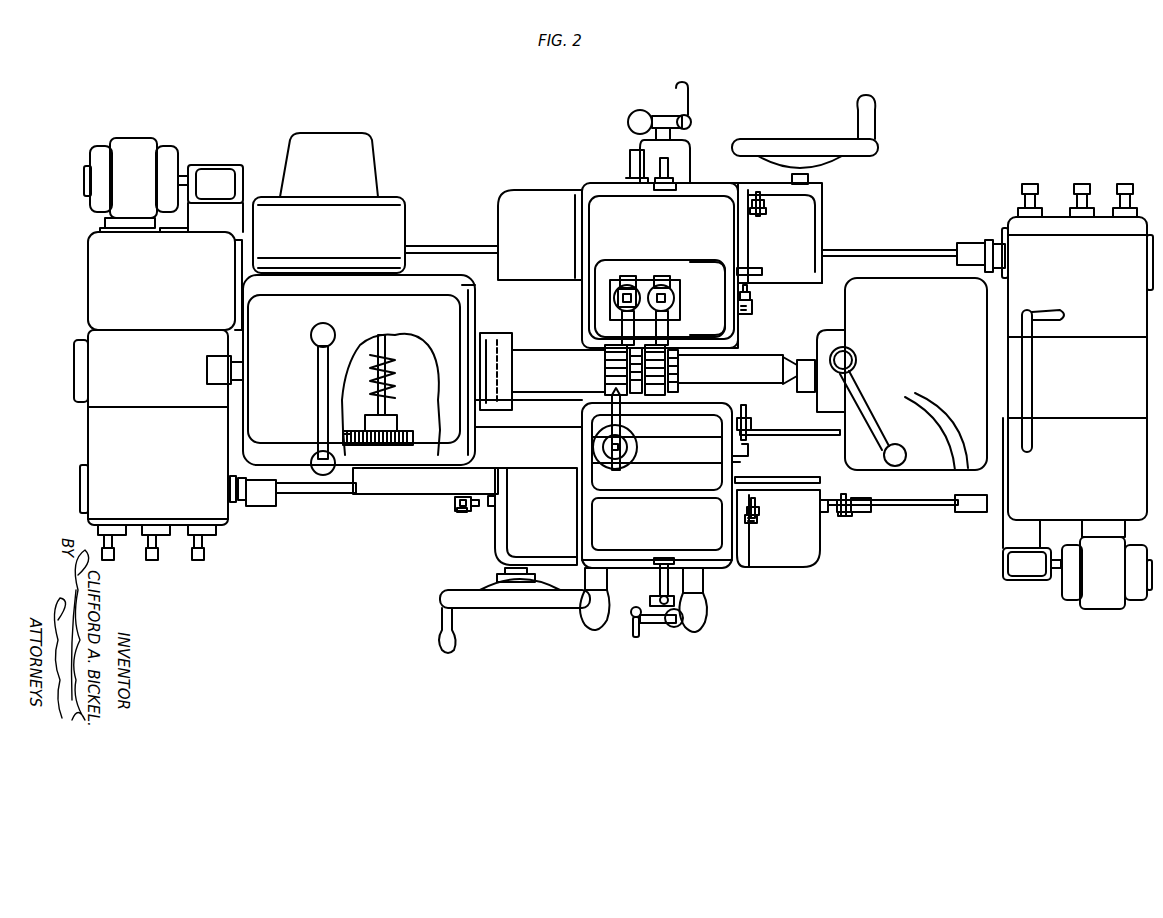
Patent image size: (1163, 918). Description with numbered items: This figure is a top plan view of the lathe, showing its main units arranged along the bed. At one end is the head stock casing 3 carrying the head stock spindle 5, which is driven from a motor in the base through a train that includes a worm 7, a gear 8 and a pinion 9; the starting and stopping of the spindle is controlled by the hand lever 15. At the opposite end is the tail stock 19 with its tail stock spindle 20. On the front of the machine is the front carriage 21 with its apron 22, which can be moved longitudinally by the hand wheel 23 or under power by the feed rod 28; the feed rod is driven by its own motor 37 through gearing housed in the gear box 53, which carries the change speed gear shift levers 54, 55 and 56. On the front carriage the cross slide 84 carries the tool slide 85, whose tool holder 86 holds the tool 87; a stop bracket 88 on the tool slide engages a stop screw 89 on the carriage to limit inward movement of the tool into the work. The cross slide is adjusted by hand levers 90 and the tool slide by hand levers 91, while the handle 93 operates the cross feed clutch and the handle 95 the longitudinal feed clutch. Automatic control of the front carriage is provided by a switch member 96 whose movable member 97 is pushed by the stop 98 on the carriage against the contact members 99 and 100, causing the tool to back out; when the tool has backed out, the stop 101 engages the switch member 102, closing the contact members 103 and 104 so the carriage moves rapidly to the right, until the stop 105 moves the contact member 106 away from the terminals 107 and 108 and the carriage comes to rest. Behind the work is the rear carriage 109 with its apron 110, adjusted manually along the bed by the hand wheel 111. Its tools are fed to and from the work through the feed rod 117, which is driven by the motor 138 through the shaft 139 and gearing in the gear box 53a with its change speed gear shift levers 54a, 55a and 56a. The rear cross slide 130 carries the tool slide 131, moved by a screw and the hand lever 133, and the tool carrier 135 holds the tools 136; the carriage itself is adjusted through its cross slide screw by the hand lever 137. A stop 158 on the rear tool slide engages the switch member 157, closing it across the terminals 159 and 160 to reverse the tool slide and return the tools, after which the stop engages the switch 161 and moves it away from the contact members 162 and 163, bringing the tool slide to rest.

The head stock casing 3 is at (426, 310).
The head stock spindle 5 is at (492, 333).
The worm 7 is at (393, 383).
The gear 8 is at (409, 432).
The pinion 9 is at (350, 432).
The hand lever 15 is at (318, 401).
The tail stock 19 is at (900, 300).
The tail stock spindle 20 is at (825, 356).
The front carriage 21 is at (720, 563).
The apron 22 is at (812, 556).
The hand wheel 23 is at (518, 608).
The feed rod 28 is at (335, 497).
The motor 37 is at (131, 150).
The gear box 53 is at (96, 456).
The change speed gear shift lever 54 is at (112, 565).
The change speed gear shift lever 55 is at (157, 565).
The change speed gear shift lever 56 is at (204, 565).
The gear box 53a is at (1050, 247).
The change speed gear shift lever 54a is at (1030, 184).
The change speed gear shift lever 55a is at (1083, 184).
The change speed gear shift lever 56a is at (1126, 184).
The cross slide 84 is at (745, 412).
The tool slide 85 is at (695, 425).
The tool holder 86 is at (625, 447).
The tool 87 is at (610, 420).
The stop bracket 88 is at (750, 452).
The stop screw 89 is at (748, 440).
The hand levers 90 is at (660, 625).
The hand levers 91 is at (664, 556).
The handle 93 is at (695, 632).
The handle 95 is at (590, 630).
The switch member 96 is at (472, 504).
The movable member 97 is at (462, 512).
The stop 98 is at (490, 505).
The contact member 99 is at (458, 497).
The contact member 100 is at (455, 508).
The stop 101 is at (760, 478).
The switch member 102 is at (760, 505).
The contact member 103 is at (748, 522).
The contact member 104 is at (758, 517).
The stop 105 is at (825, 512).
The contact member 106 is at (862, 506).
The terminal 107 is at (845, 500).
The terminal 108 is at (845, 516).
The rear carriage 109 is at (600, 188).
The apron 110 is at (520, 188).
The hand wheel 111 is at (797, 148).
The feed rod 117 is at (845, 252).
The cross slide 130 is at (740, 346).
The tool slide 131 is at (700, 325).
The hand lever 133 is at (670, 170).
The tool carrier 135 is at (614, 298).
The tools 136 is at (660, 280).
The hand lever 137 is at (661, 118).
The motor 138 is at (1110, 600).
The shaft 139 is at (1053, 583).
The switch member 157 is at (752, 297).
The stop 158 is at (755, 268).
The terminal 159 is at (746, 318).
The terminal 160 is at (755, 312).
The switch 161 is at (757, 192).
The contact member 162 is at (752, 202).
The contact member 163 is at (762, 203).